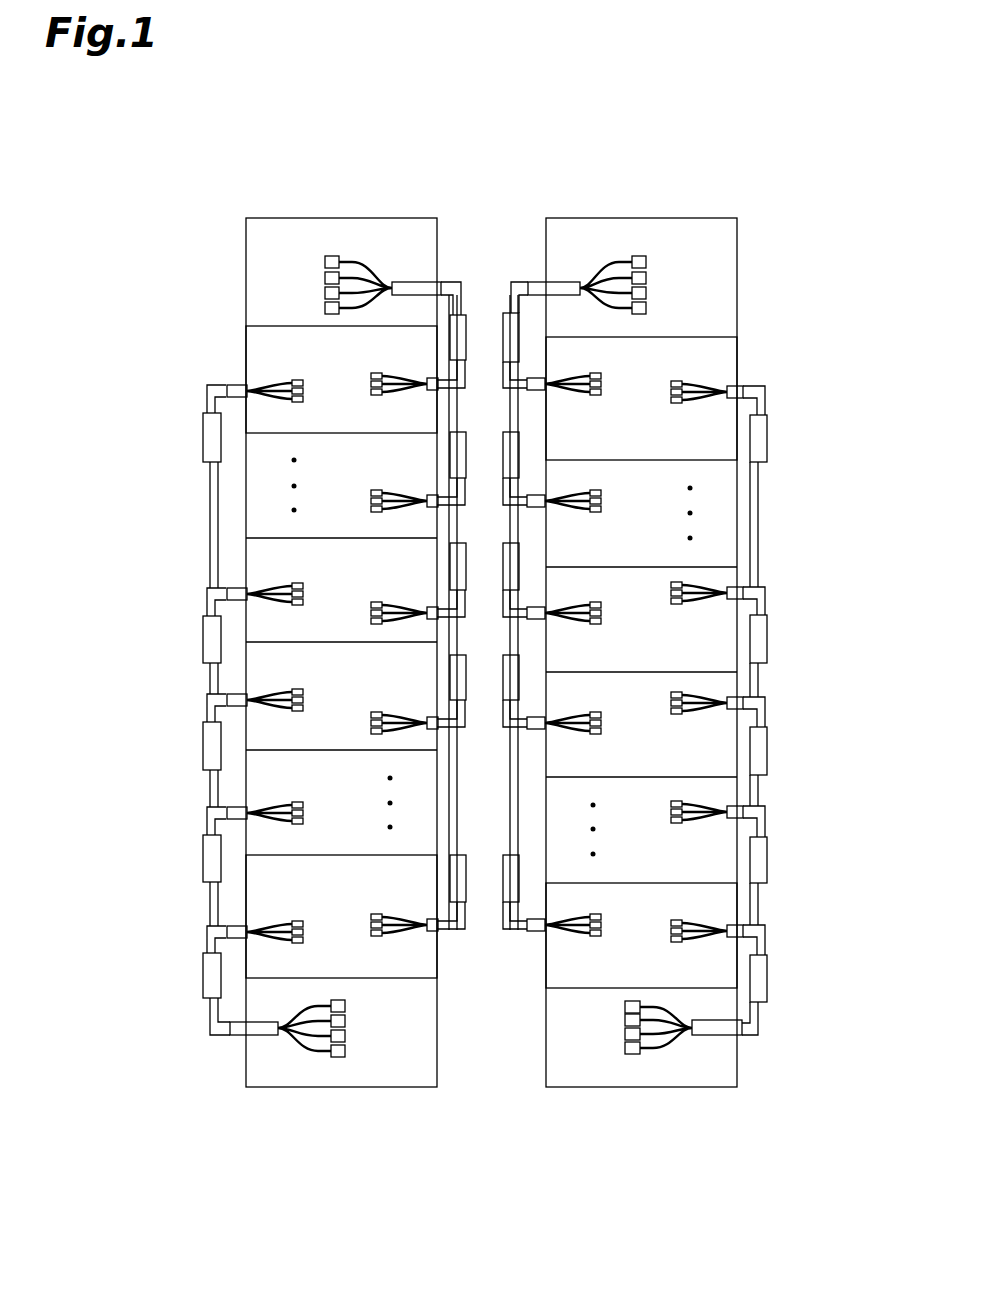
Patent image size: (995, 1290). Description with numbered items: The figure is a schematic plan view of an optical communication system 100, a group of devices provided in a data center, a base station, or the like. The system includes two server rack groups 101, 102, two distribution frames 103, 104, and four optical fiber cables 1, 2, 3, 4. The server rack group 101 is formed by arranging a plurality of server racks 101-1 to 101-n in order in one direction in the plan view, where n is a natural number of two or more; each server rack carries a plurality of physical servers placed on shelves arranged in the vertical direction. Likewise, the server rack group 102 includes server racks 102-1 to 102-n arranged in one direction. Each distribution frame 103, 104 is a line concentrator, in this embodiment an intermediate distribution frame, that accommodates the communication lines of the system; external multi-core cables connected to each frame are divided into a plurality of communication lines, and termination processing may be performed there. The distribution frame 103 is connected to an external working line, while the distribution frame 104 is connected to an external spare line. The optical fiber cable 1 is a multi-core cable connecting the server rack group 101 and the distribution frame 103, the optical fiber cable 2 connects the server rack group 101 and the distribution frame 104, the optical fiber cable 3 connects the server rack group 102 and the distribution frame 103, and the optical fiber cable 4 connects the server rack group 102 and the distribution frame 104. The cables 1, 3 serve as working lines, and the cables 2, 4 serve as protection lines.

The optical communication system 100 is at (764, 150).
The server rack group 101 is at (240, 375).
The server rack group 102 is at (748, 370).
The server rack 101-1 is at (265, 344).
The server rack 101-n is at (260, 905).
The server rack 102-1 is at (715, 347).
The server rack 102-n is at (715, 905).
The distribution frame 103 is at (545, 204).
The distribution frame 104 is at (544, 1096).
The optical fiber cable 1 is at (462, 940).
The optical fiber cable 2 is at (205, 495).
The optical fiber cable 3 is at (527, 940).
The optical fiber cable 4 is at (768, 521).